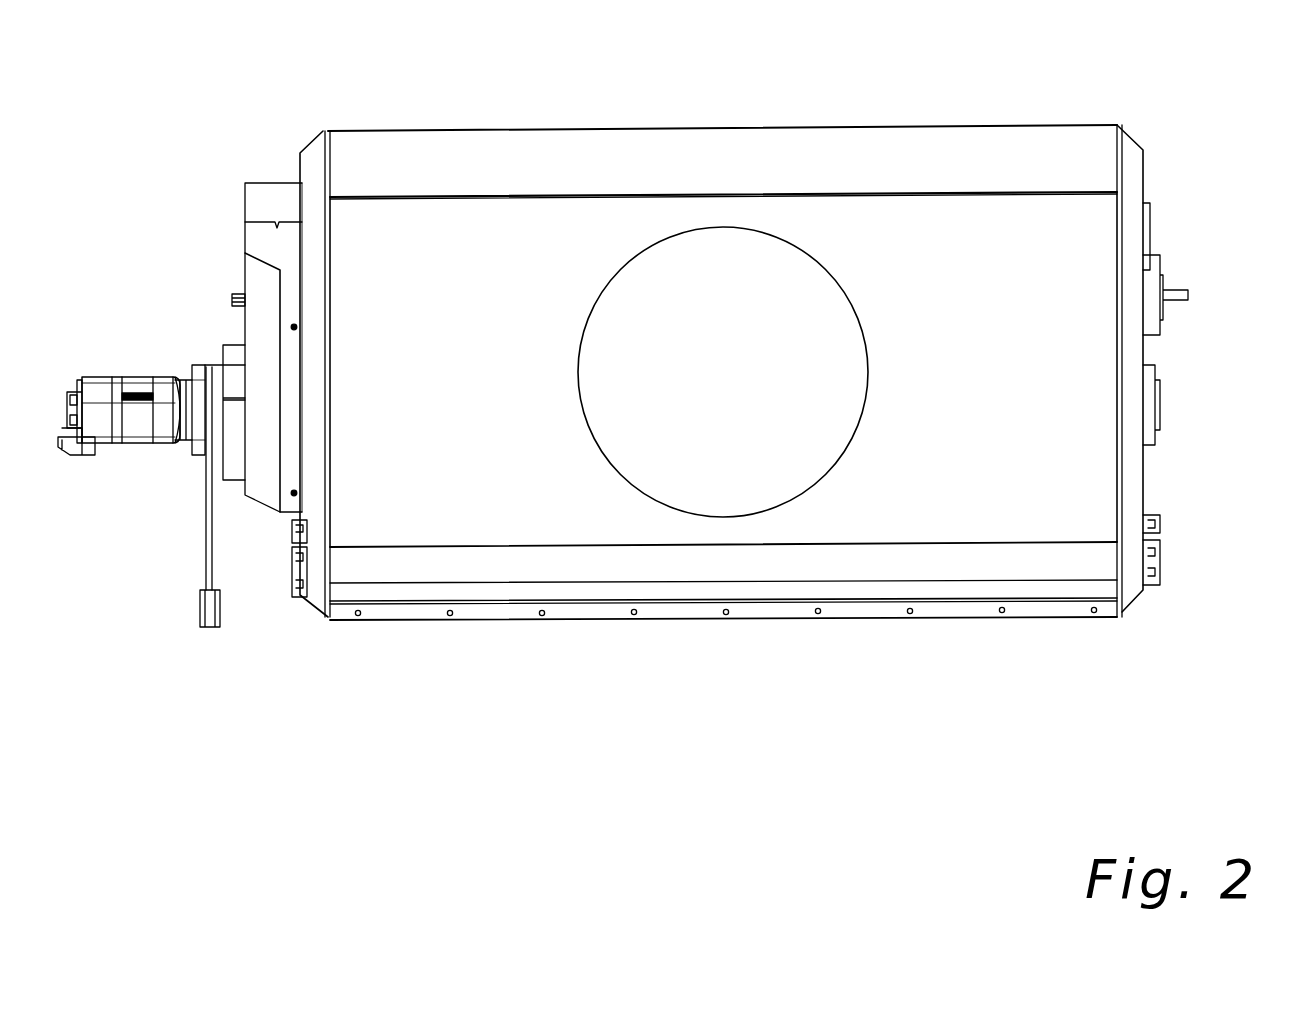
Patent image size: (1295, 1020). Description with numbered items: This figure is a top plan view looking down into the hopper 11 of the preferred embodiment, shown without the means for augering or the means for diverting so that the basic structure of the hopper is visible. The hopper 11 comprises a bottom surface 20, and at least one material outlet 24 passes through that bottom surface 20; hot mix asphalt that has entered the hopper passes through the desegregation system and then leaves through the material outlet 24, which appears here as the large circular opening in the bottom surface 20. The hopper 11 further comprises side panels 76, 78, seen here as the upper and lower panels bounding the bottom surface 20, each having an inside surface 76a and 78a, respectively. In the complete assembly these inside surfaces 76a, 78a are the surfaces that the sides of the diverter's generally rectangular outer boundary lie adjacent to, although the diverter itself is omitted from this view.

The hopper 11 is at (692, 101).
The bottom surface 20 is at (723, 362).
The material outlet 24 is at (667, 475).
The side panel 76 is at (418, 130).
The inside surface 76a is at (400, 198).
The side panel 78 is at (940, 620).
The inside surface 78a is at (980, 582).